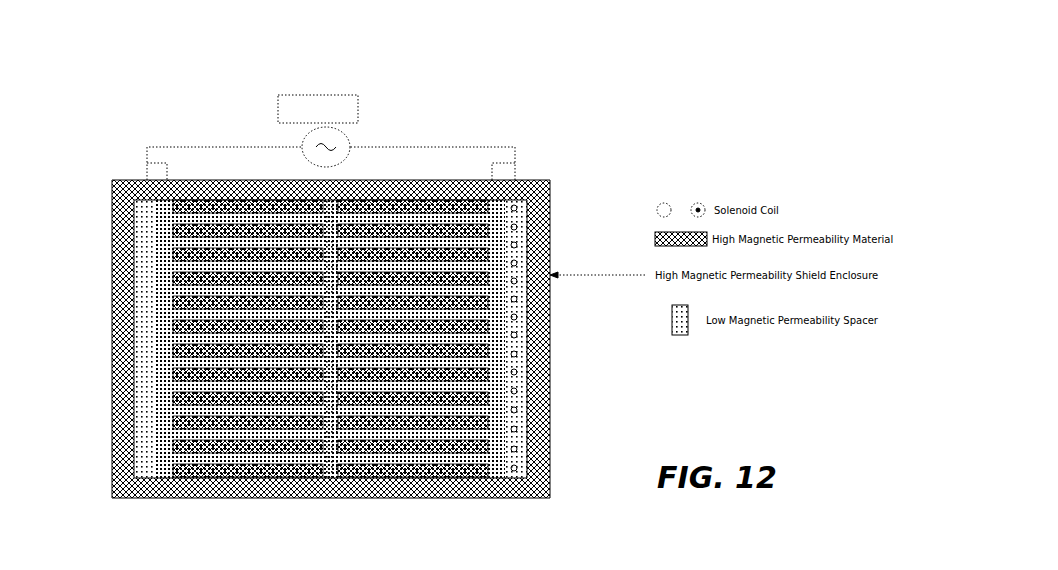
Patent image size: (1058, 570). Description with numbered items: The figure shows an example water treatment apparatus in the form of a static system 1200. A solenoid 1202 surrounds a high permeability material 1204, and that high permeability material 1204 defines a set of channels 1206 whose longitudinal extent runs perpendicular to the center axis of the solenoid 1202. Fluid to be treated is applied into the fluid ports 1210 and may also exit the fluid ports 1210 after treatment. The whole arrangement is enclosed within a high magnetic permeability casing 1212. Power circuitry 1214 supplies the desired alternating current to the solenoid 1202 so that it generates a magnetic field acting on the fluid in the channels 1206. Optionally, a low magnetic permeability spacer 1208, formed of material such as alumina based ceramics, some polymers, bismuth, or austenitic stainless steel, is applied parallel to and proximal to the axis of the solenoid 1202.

The static system 1200 is at (340, 292).
The solenoid 1202 is at (511, 316).
The high permeability material 1204 is at (217, 207).
The channels 1206 is at (262, 242).
The low magnetic permeability spacer 1208 is at (332, 450).
The fluid ports 1210 is at (168, 187).
The high magnetic permeability casing 1212 is at (533, 387).
The power circuitry 1214 is at (317, 130).